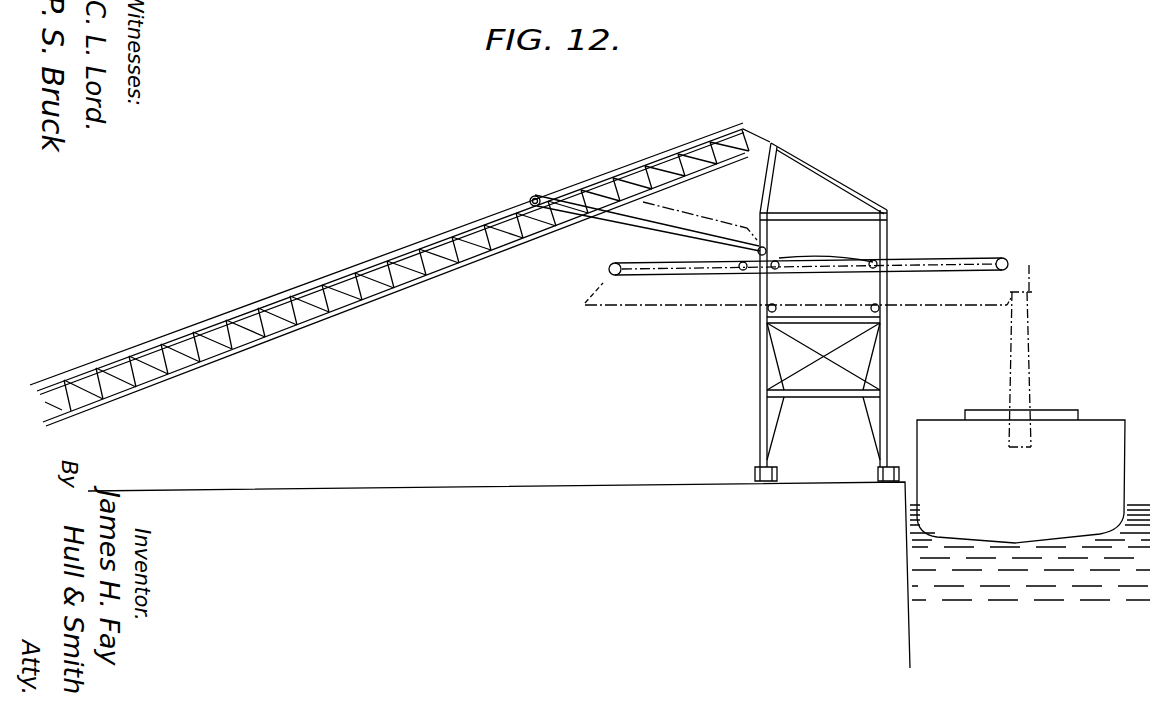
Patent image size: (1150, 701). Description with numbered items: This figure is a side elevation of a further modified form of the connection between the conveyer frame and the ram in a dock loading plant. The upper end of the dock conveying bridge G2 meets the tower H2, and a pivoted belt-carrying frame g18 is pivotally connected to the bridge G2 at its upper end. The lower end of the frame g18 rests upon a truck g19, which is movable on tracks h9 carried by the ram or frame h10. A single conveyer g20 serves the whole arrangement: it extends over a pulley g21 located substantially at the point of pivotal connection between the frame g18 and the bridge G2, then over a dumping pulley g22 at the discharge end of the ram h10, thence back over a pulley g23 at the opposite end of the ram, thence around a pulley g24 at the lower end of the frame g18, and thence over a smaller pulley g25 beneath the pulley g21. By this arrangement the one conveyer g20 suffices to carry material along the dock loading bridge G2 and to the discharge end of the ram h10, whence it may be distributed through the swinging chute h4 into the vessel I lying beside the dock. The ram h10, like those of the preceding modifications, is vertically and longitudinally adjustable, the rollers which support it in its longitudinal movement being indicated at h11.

The dock conveying bridge G2 is at (400, 265).
The tower H2 is at (886, 225).
The vessel I is at (1021, 476).
The pivoted belt-carrying frame g18 is at (704, 218).
The truck g19 is at (777, 260).
The conveyer g20 is at (468, 221).
The pulley g21 is at (537, 196).
The dumping pulley g22 is at (1009, 260).
The pulley g23 is at (609, 270).
The pulley g24 is at (767, 247).
The smaller pulley g25 is at (530, 247).
The swinging chute h4 is at (1028, 333).
The tracks h9 is at (938, 262).
The ram h10 is at (798, 290).
The rollers h11 is at (767, 311).